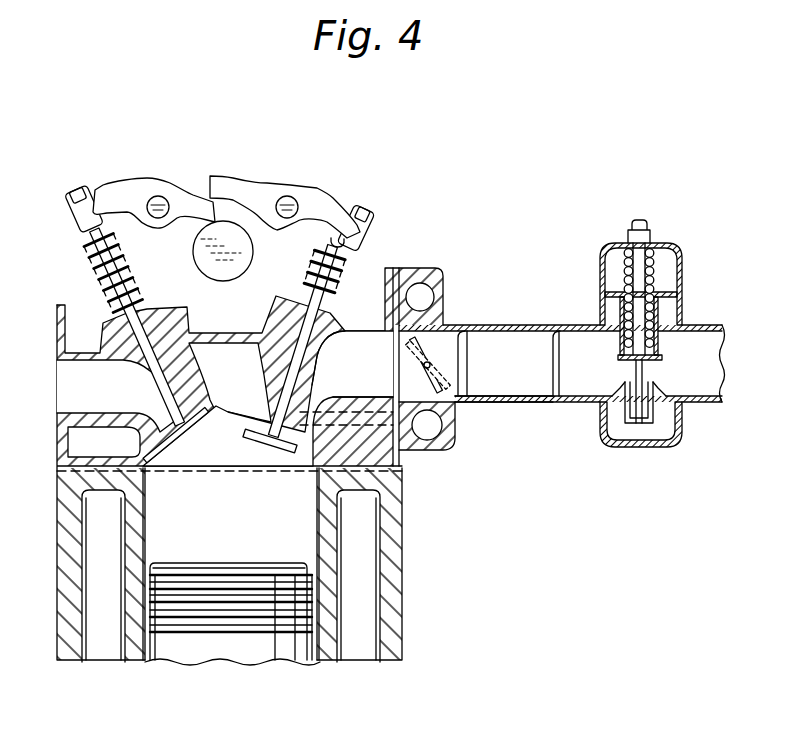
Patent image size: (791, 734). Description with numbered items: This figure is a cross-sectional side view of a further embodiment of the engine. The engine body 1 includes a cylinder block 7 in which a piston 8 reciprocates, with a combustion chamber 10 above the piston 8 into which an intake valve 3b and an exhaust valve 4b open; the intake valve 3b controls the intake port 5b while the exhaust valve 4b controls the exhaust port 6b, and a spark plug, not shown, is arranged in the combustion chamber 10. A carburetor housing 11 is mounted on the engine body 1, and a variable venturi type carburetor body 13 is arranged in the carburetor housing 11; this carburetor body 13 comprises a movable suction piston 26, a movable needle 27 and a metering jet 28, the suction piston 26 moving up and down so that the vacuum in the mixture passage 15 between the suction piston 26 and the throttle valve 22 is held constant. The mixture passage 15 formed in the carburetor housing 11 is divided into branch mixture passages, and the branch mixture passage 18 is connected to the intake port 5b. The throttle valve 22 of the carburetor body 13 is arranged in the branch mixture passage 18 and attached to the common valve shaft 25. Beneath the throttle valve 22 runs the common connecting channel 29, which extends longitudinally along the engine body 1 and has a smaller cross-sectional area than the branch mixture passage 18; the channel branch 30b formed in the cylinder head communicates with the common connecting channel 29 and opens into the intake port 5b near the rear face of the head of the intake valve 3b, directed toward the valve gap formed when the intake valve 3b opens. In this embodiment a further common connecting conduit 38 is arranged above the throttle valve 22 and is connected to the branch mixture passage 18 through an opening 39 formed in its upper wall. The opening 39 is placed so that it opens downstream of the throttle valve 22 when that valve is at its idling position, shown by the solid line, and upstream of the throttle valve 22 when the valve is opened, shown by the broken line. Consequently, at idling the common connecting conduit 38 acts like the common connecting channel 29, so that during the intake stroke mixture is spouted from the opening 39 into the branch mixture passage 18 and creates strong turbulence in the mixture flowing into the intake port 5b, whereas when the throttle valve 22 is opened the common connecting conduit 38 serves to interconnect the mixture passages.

The engine body 1 is at (404, 572).
The intake valve 3b is at (293, 358).
The exhaust valve 4b is at (182, 326).
The intake port 5b is at (362, 376).
The exhaust port 6b is at (110, 399).
The cylinder block 7 is at (345, 634).
The piston 8 is at (246, 650).
The combustion chamber 10 is at (232, 506).
The carburetor housing 11 is at (543, 402).
The carburetor body 13 is at (657, 336).
The mixture passage 15 is at (572, 350).
The branch mixture passage 18 is at (456, 361).
The throttle valve 22 is at (437, 348).
The common valve shaft 25 is at (462, 397).
The suction piston 26 is at (665, 345).
The movable needle 27 is at (672, 378).
The metering jet 28 is at (648, 420).
The common connecting channel 29 is at (432, 430).
The channel branch 30b is at (316, 456).
The common connecting conduit 38 is at (415, 288).
The opening 39 is at (443, 300).